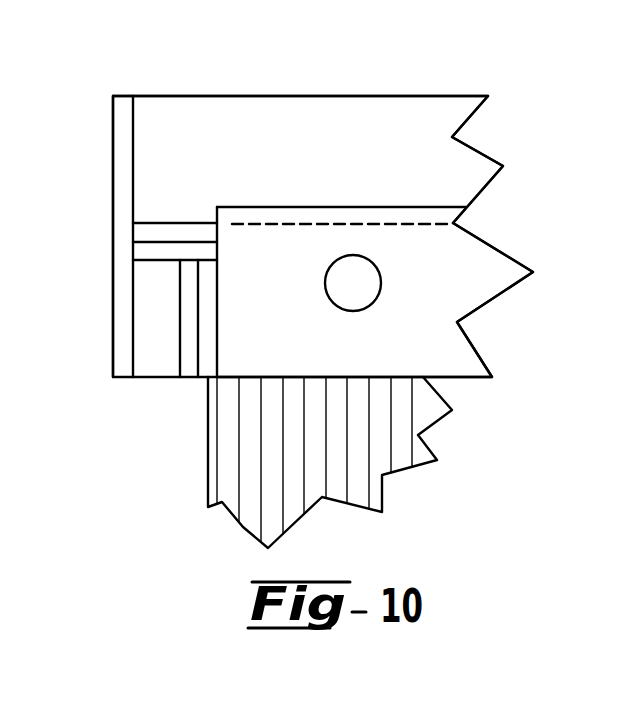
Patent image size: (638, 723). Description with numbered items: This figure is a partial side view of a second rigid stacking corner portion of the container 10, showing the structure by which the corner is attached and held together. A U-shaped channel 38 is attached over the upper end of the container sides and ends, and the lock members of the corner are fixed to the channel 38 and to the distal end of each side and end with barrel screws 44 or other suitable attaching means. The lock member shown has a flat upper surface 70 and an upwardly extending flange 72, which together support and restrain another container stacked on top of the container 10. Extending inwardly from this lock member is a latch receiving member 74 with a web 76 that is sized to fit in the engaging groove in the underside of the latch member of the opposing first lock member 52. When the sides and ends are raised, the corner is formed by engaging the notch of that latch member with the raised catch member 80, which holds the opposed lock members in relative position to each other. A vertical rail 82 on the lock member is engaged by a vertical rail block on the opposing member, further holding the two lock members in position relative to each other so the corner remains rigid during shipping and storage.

The container 10 is at (380, 450).
The U-shaped channel 38 is at (447, 353).
The barrel screws 44 is at (368, 285).
The first lock member 52 is at (527, 115).
The flat upper surface 70 is at (355, 207).
The upwardly extending flange 72 is at (285, 140).
The latch receiving member 74 is at (202, 96).
The web 76 is at (119, 172).
The raised catch member 80 is at (146, 237).
The vertical rail 82 is at (187, 362).